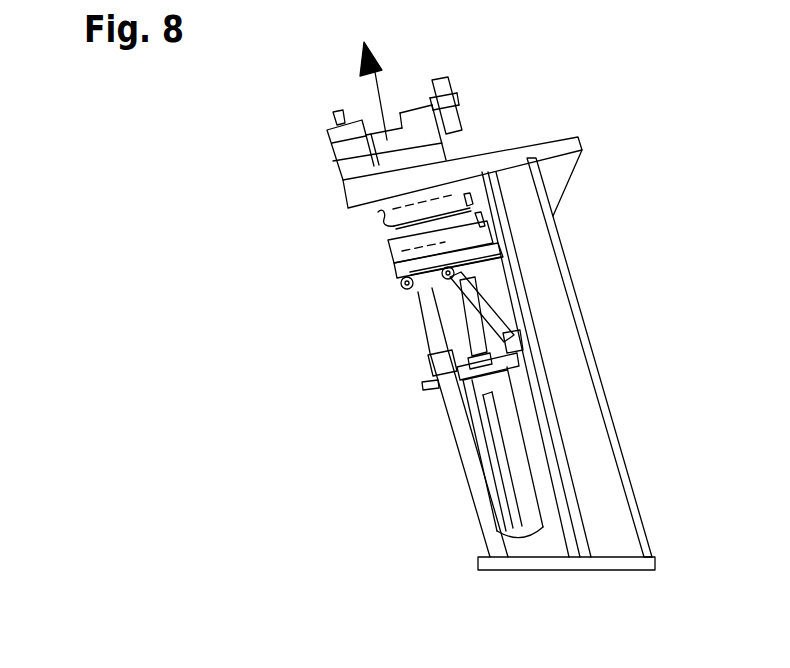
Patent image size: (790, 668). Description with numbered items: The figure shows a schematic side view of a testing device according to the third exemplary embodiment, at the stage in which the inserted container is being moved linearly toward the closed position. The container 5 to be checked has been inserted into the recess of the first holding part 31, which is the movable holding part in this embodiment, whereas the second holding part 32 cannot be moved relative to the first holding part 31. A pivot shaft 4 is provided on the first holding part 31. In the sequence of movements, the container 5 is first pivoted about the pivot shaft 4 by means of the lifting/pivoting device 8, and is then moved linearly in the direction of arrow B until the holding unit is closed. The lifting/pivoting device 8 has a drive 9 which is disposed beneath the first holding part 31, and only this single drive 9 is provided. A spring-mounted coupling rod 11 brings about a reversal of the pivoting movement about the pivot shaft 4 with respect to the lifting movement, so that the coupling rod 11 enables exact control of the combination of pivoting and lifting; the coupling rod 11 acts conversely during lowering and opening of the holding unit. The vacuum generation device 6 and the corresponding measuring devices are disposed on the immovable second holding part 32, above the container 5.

The pivot shaft 4 is at (410, 290).
The container 5 is at (397, 234).
The vacuum generation device 6 is at (428, 138).
The lifting/pivoting device 8 is at (450, 453).
The drive 9 is at (505, 440).
The spring-mounted coupling rod 11 is at (478, 303).
The first holding part 31 is at (394, 267).
The second holding part 32 is at (378, 212).
The arrow B is at (378, 88).